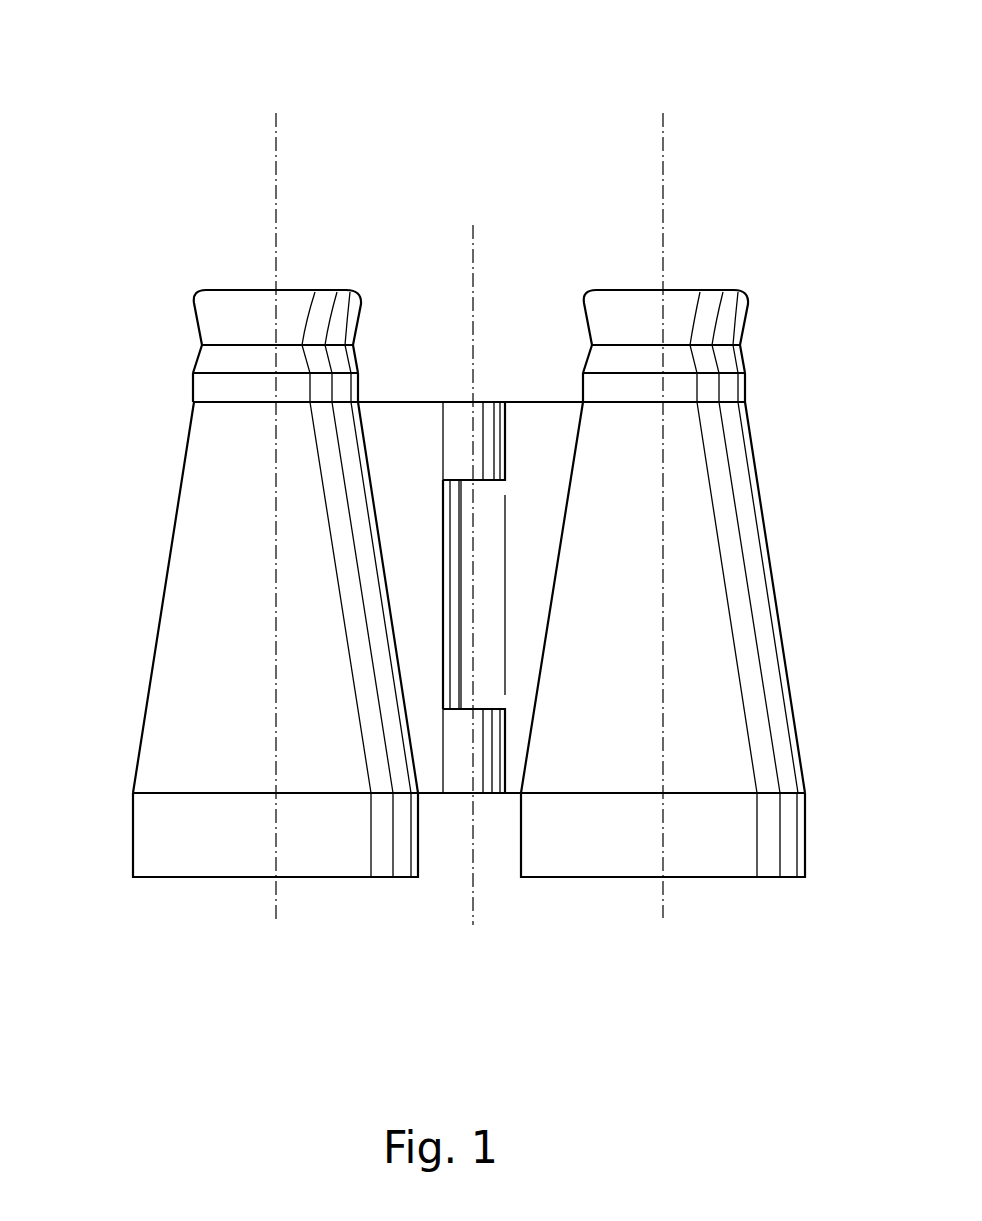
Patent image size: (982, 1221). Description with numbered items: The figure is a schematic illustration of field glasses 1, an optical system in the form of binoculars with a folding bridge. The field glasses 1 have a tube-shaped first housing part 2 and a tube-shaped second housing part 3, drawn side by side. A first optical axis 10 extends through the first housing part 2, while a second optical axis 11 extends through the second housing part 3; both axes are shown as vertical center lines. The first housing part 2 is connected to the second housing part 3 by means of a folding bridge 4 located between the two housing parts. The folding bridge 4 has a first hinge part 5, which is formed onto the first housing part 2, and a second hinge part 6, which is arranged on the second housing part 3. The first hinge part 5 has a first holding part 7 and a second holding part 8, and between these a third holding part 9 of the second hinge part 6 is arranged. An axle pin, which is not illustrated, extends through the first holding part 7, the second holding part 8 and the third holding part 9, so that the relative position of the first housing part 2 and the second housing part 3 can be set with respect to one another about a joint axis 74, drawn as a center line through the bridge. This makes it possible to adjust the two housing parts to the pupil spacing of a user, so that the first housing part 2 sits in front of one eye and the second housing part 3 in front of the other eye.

The field glasses 1 is at (792, 259).
The first housing part 2 is at (170, 668).
The second housing part 3 is at (765, 671).
The folding bridge 4 is at (460, 523).
The first hinge part 5 is at (395, 528).
The second hinge part 6 is at (555, 463).
The first holding part 7 is at (463, 450).
The second holding part 8 is at (463, 737).
The third holding part 9 is at (482, 567).
The first optical axis 10 is at (276, 125).
The second optical axis 11 is at (663, 125).
The joint axis 74 is at (472, 913).